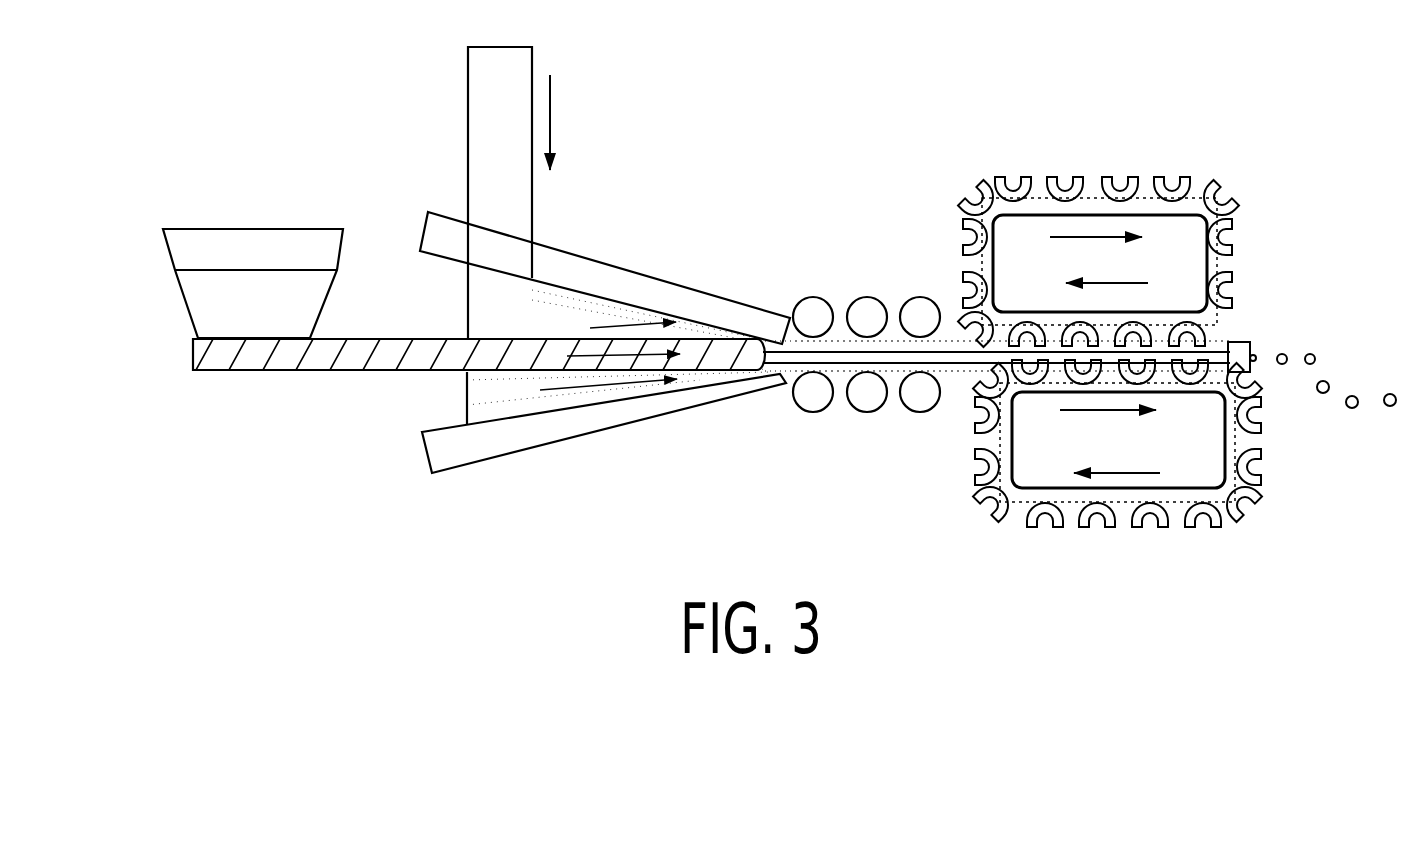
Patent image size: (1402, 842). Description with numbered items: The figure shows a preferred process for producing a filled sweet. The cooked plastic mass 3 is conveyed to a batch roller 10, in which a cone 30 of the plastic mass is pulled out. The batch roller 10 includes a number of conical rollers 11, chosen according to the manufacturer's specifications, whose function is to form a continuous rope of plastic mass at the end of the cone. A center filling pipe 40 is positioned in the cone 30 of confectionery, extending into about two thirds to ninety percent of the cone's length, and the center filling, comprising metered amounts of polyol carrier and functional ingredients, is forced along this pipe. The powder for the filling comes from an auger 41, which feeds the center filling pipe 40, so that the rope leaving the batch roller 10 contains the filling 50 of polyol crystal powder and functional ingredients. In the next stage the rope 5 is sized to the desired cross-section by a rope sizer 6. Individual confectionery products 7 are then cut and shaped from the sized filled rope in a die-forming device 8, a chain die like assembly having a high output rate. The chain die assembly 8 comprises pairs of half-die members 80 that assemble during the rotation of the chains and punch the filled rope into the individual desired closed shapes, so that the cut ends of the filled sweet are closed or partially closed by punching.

The cooked plastic mass 3 is at (458, 72).
The auger 41 is at (180, 302).
The center filling pipe 40 is at (217, 385).
The cone of plastic mass 30 is at (445, 402).
The conical rollers 11 is at (647, 293).
The batch roller 10 is at (514, 470).
The filling 50 is at (792, 365).
The rope sizer 6 is at (840, 284).
The rope 5 is at (953, 388).
The die-forming device 8 is at (1276, 214).
The half-die members 80 is at (1252, 340).
The individual confectionery products 7 is at (1323, 393).